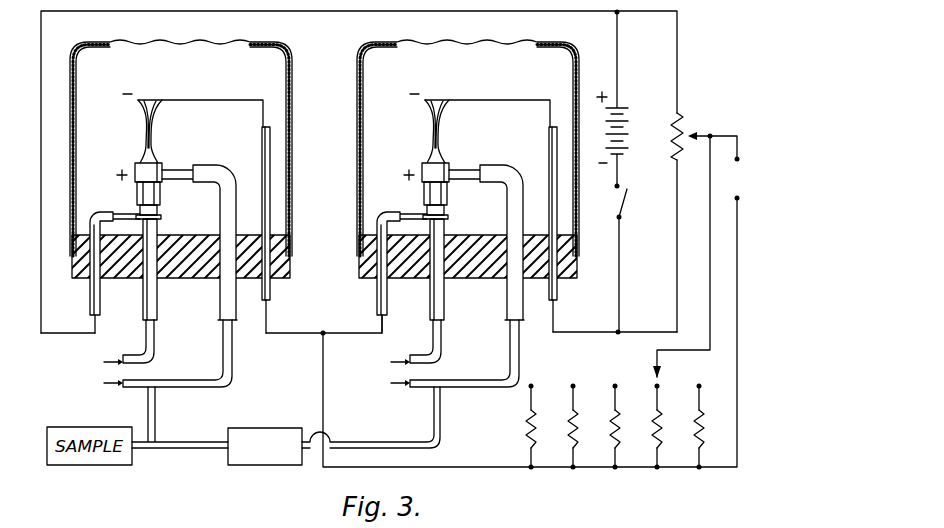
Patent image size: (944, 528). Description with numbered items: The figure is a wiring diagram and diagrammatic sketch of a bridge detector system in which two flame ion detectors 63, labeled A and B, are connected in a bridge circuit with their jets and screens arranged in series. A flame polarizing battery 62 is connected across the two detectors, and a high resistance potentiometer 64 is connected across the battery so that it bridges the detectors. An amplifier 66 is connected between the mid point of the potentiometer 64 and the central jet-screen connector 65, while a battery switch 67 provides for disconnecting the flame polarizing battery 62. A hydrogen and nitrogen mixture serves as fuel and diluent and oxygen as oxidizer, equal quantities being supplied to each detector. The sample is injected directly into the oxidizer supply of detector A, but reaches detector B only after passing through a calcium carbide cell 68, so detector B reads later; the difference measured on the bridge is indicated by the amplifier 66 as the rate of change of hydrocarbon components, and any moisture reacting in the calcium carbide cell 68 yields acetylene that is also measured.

The flame polarizing battery 62 is at (632, 110).
The flame ion detectors 63 is at (324, 207).
The high resistance potentiometer 64 is at (684, 117).
The central jet-screen connector 65 is at (305, 336).
The amplifier 66 is at (758, 177).
The battery switch 67 is at (627, 196).
The calcium carbide cell 68 is at (264, 429).